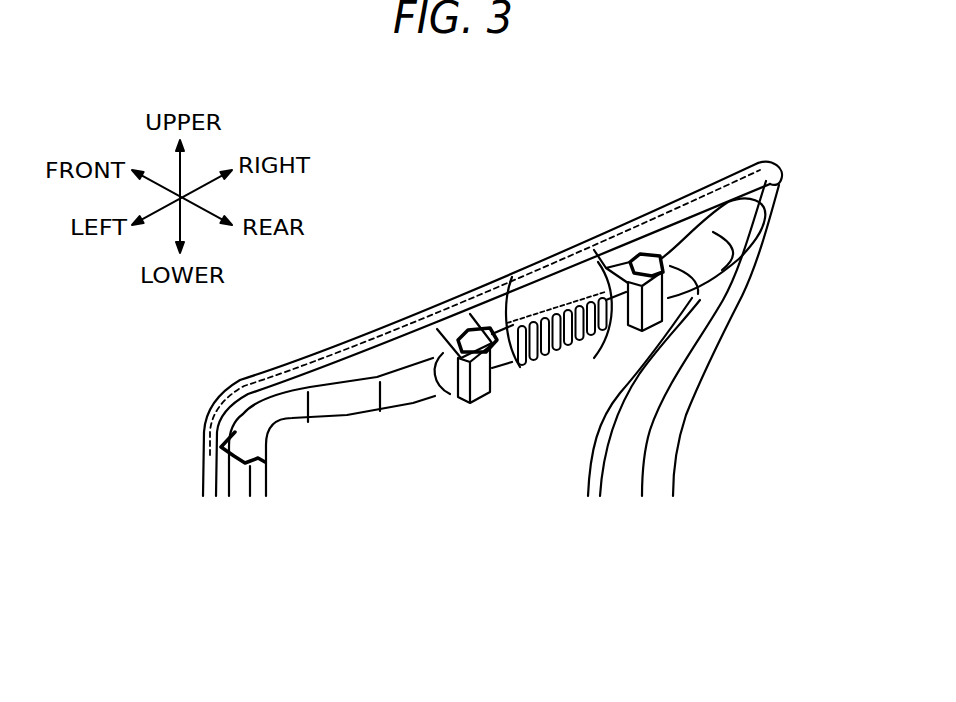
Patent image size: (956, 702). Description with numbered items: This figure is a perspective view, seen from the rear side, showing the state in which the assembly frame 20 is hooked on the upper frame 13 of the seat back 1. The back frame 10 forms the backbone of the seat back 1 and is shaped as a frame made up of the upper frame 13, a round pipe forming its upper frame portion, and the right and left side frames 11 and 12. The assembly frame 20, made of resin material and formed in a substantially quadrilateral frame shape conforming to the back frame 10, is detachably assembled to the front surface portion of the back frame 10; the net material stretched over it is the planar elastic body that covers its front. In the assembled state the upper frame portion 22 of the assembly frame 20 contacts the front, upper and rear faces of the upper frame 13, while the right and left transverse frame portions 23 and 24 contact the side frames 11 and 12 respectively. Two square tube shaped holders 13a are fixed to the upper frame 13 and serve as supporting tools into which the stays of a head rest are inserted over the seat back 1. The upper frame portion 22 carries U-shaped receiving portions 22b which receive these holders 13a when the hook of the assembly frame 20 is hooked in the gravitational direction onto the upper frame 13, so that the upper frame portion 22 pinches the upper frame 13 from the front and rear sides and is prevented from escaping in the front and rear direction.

The seat back 1 is at (404, 186).
The back frame 10 is at (347, 426).
The side frame 11 is at (240, 480).
The side frame 12 is at (622, 465).
The upper frame 13 is at (407, 400).
The holder 13a is at (483, 400).
The assembly frame 20 is at (617, 220).
The upper frame portion 22 is at (500, 282).
The receiving portion 22b is at (470, 306).
The transverse frame portion 23 is at (207, 472).
The transverse frame portion 24 is at (772, 190).